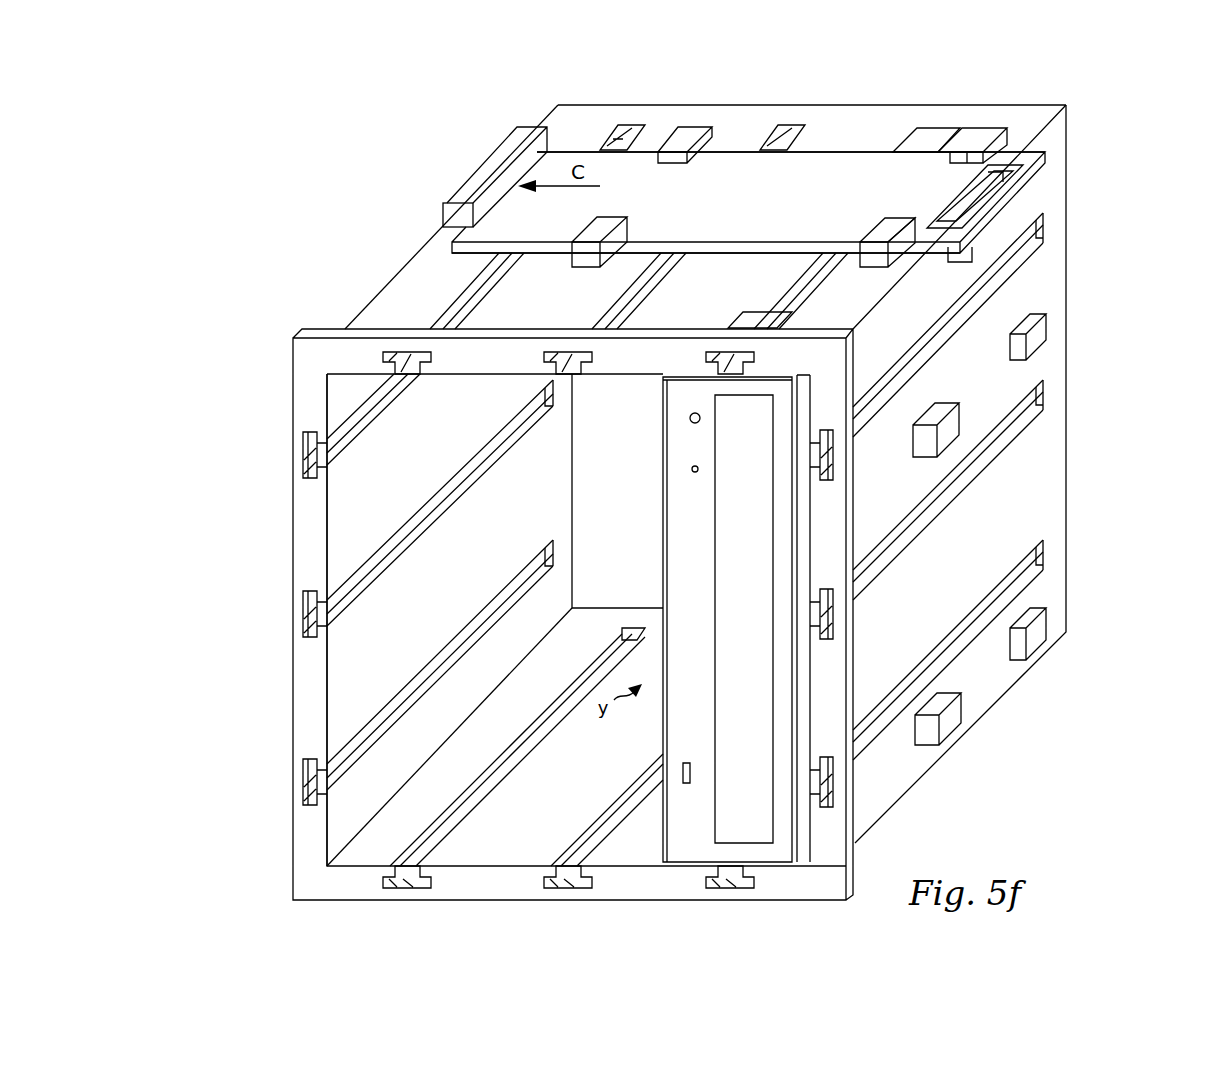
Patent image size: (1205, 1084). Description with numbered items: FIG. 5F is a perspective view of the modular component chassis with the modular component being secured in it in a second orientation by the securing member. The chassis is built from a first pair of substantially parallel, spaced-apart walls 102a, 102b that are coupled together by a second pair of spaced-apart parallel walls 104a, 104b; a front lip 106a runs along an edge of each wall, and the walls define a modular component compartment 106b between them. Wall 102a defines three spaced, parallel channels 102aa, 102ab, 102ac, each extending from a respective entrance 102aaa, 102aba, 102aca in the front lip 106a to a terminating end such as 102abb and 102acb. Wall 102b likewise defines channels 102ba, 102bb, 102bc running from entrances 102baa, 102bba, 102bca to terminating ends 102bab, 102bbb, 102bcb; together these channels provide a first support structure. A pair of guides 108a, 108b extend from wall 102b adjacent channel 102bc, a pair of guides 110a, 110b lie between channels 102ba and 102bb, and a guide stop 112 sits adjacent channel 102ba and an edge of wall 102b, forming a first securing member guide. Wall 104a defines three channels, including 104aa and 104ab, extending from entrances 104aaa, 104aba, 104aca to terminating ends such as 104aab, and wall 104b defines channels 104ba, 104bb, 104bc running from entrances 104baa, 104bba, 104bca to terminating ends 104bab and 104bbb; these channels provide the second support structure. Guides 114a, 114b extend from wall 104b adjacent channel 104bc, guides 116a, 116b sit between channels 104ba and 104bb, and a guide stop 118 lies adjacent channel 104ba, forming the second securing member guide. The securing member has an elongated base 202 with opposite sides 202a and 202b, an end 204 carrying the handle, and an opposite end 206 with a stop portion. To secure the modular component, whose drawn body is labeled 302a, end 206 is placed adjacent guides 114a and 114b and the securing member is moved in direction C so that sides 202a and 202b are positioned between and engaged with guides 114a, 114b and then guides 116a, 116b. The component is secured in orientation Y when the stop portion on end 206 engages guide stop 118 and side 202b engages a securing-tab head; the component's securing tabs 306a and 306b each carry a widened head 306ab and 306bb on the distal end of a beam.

The wall 102a is at (560, 467).
The channel 102aa is at (374, 420).
The entrance 102aaa is at (303, 456).
The channel 102ab is at (376, 578).
The entrance 102aba is at (303, 614).
The terminating end 102abb is at (544, 384).
The channel 102ac is at (424, 683).
The entrance 102aca is at (303, 778).
The terminating end 102acb is at (547, 540).
The wall 102b is at (1052, 450).
The channel 102ba is at (1024, 258).
The entrance 102baa is at (853, 458).
The terminating end 102bab is at (1047, 228).
The channel 102bb is at (964, 484).
The entrance 102bba is at (853, 618).
The terminating end 102bbb is at (1047, 392).
The channel 102bc is at (992, 636).
The entrance 102bca is at (834, 788).
The terminating end 102bcb is at (1047, 552).
The wall 104a is at (352, 846).
The channel 104aa is at (447, 808).
The entrance 104aaa is at (406, 888).
The terminating end 104aab is at (634, 629).
The channel 104ab is at (638, 789).
The entrance 104aba is at (566, 888).
The entrance 104aca is at (730, 888).
The wall 104b is at (432, 254).
The channel 104ba is at (466, 286).
The entrance 104baa is at (390, 328).
The terminating end 104bab is at (615, 128).
The channel 104bb is at (775, 125).
The entrance 104bba is at (557, 351).
The terminating end 104bbb is at (790, 152).
The channel 104bc is at (790, 318).
The entrance 104bca is at (718, 351).
The front lip 106a is at (305, 506).
The modular component compartment 106b is at (588, 416).
The guide 108a is at (954, 714).
The guide 108b is at (1040, 624).
The guide 110a is at (922, 457).
The guide 110b is at (1040, 336).
The guide stop 112 is at (1028, 194).
The guide 114a is at (876, 264).
The guide 114b is at (1000, 128).
The guide 116a is at (610, 224).
The guide 116b is at (678, 128).
The guide stop 118 is at (504, 141).
The elongated base 202 is at (512, 186).
The side 202a is at (700, 245).
The side 202b is at (840, 152).
The end 204 is at (1030, 180).
The end 206 is at (455, 204).
The circuit card 302a is at (682, 502).
The securing tab 306a is at (902, 132).
The head 306ab is at (967, 160).
The securing tab 306b is at (760, 300).
The head 306bb is at (787, 322).